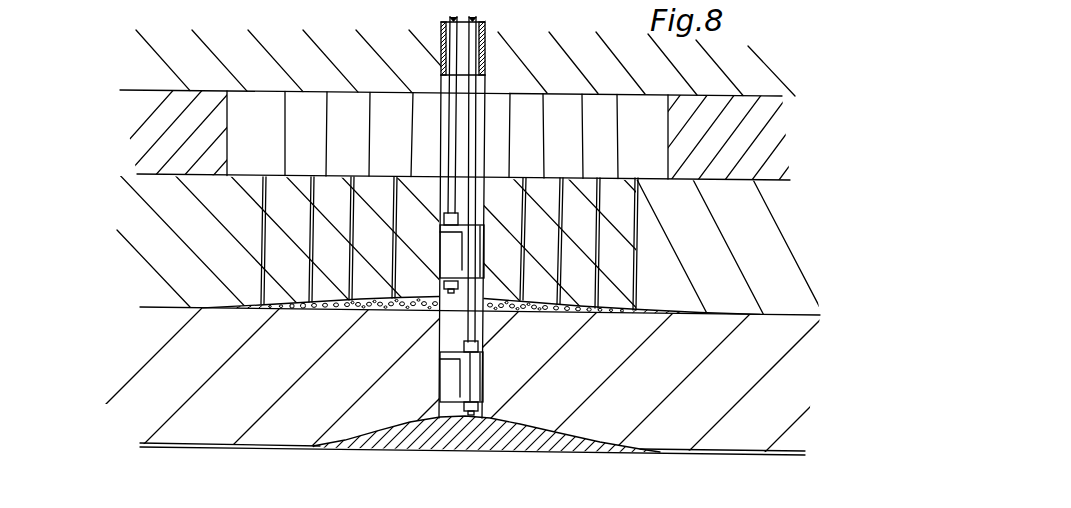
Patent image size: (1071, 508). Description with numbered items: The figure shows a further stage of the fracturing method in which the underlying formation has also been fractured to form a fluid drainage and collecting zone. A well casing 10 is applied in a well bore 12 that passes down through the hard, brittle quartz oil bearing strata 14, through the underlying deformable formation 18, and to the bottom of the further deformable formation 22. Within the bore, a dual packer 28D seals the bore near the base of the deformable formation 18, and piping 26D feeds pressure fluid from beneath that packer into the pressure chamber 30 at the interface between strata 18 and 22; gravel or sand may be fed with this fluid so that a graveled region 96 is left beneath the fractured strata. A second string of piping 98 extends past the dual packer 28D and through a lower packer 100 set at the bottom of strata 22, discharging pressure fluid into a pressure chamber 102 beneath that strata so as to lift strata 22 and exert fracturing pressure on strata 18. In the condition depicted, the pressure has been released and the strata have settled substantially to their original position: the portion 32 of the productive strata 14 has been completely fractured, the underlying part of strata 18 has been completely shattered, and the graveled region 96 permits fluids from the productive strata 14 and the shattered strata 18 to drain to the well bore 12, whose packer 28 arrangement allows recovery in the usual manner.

The well casing 10 is at (476, 52).
The well bore 12 is at (482, 217).
The quartz oil bearing strata 14 is at (183, 106).
The underlying deformable formation 18 is at (162, 275).
The further deformable formation 22 is at (173, 418).
The piping 26D is at (452, 187).
The packer 28 is at (465, 87).
The dual packer 28D is at (455, 253).
The pressure chamber 30 is at (407, 311).
The fractured portion 32 is at (352, 105).
The graveled region 96 is at (368, 313).
The second string of piping 98 is at (470, 198).
The lower packer 100 is at (465, 383).
The pressure chamber 102 is at (517, 433).